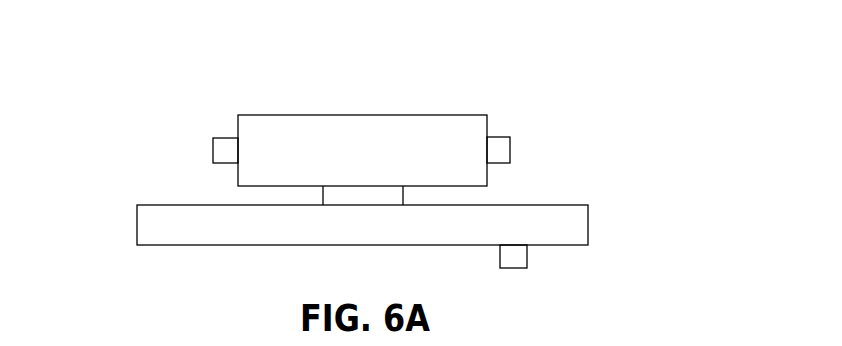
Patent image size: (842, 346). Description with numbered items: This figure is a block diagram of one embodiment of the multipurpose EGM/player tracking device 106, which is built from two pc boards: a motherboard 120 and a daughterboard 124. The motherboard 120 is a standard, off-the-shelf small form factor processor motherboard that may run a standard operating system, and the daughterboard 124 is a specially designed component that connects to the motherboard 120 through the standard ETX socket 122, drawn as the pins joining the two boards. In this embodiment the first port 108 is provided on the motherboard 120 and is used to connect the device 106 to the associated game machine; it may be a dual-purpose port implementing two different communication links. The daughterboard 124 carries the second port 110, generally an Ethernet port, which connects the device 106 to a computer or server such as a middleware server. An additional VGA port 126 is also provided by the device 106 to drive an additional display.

The multipurpose EGM/player tracking device 106 is at (218, 88).
The first port 108 is at (213, 150).
The second port 110 is at (527, 255).
The motherboard 120 is at (362, 115).
The ETX socket 122 is at (403, 195).
The daughterboard 124 is at (588, 218).
The VGA port 126 is at (510, 148).